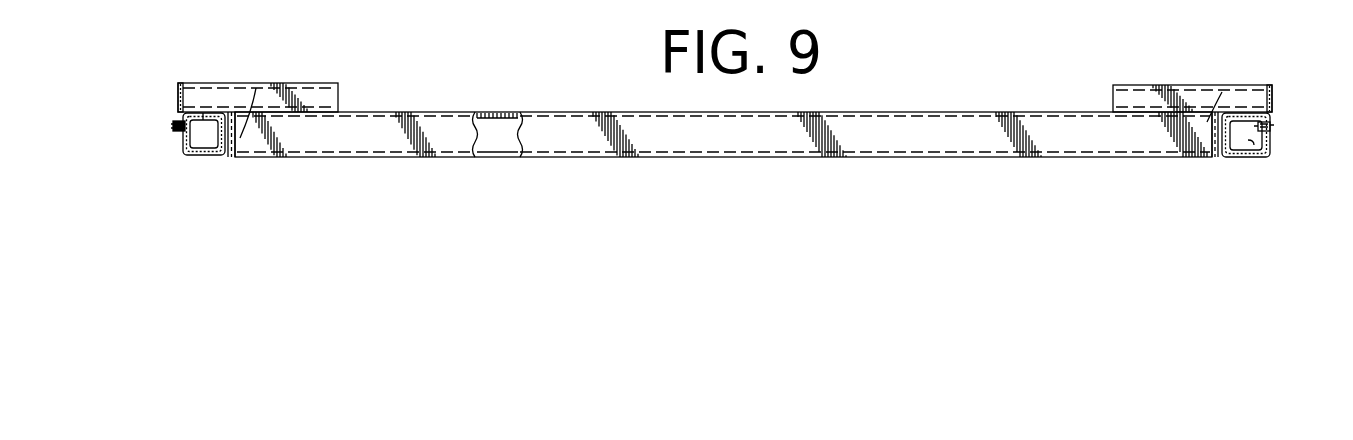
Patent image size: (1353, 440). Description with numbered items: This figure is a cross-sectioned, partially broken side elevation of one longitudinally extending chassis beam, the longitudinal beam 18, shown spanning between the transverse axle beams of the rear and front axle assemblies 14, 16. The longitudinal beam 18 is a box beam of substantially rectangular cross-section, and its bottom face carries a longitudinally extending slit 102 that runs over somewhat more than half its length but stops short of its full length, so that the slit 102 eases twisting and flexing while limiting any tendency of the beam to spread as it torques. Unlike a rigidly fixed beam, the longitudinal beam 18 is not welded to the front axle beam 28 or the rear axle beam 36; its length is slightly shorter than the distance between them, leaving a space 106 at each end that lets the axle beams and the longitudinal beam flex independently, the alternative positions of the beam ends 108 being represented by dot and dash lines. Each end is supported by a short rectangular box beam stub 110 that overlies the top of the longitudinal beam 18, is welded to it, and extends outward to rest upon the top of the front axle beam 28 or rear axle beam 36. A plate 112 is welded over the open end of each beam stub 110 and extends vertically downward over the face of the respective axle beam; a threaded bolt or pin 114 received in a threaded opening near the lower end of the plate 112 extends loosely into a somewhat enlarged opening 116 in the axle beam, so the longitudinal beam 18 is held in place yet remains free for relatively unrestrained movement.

The rear axle assembly 14 is at (183, 143).
The front axle assembly 16 is at (1265, 148).
The longitudinal beam 18 is at (878, 122).
The front axle beam 28 is at (1243, 150).
The rear axle beam 36 is at (208, 147).
The slit 102 is at (505, 157).
The space 106 is at (231, 158).
The beam ends 108 is at (257, 78).
The box beam stub 110 is at (312, 84).
The plate 112 is at (178, 102).
The threaded bolt or pin 114 is at (180, 126).
The enlarged opening 116 is at (203, 110).